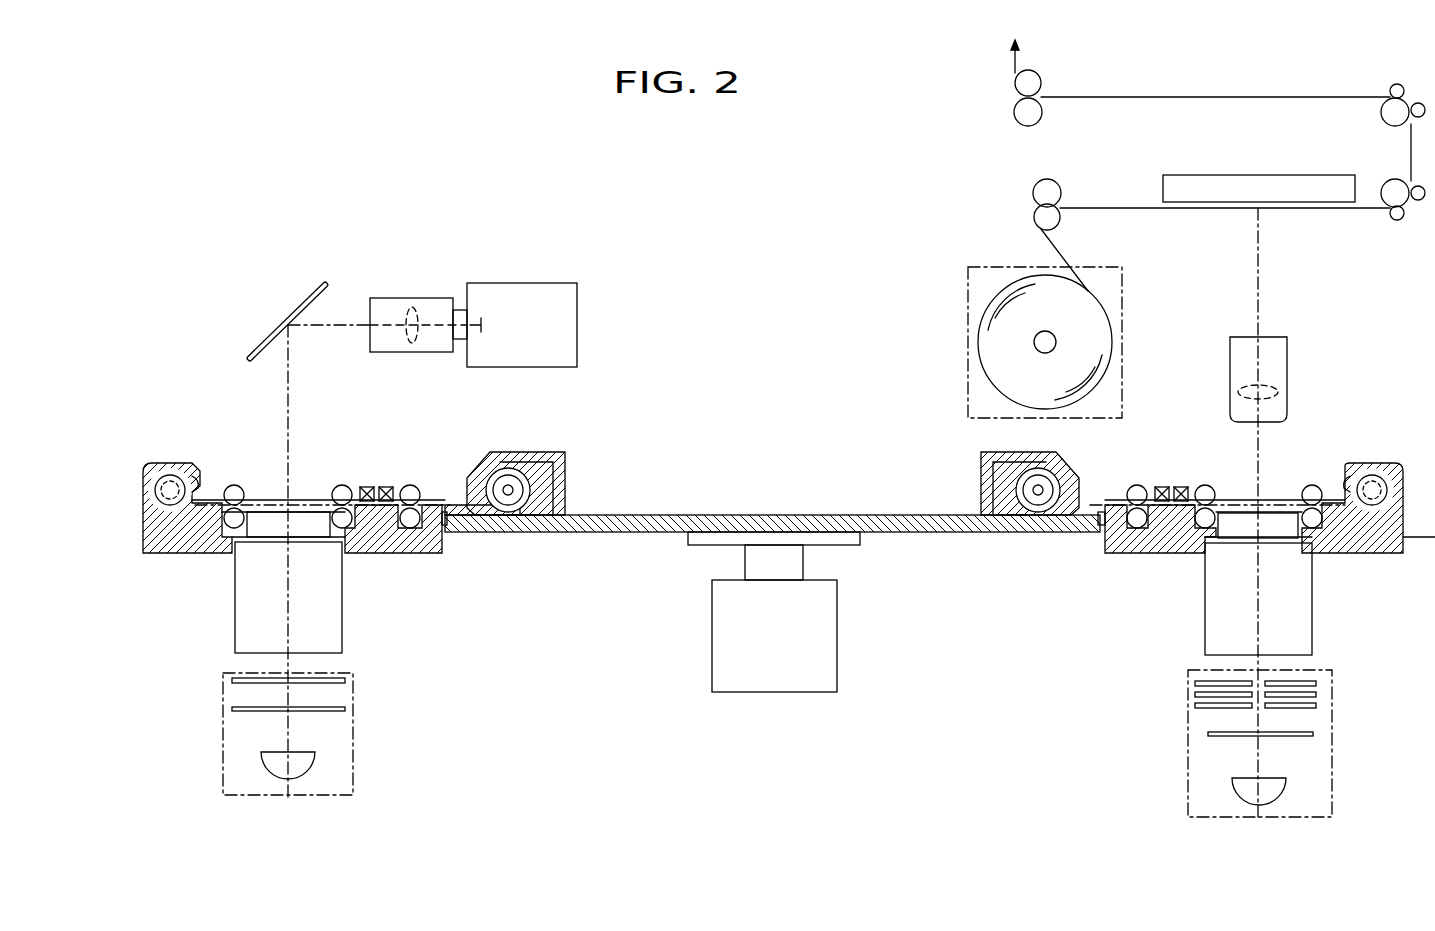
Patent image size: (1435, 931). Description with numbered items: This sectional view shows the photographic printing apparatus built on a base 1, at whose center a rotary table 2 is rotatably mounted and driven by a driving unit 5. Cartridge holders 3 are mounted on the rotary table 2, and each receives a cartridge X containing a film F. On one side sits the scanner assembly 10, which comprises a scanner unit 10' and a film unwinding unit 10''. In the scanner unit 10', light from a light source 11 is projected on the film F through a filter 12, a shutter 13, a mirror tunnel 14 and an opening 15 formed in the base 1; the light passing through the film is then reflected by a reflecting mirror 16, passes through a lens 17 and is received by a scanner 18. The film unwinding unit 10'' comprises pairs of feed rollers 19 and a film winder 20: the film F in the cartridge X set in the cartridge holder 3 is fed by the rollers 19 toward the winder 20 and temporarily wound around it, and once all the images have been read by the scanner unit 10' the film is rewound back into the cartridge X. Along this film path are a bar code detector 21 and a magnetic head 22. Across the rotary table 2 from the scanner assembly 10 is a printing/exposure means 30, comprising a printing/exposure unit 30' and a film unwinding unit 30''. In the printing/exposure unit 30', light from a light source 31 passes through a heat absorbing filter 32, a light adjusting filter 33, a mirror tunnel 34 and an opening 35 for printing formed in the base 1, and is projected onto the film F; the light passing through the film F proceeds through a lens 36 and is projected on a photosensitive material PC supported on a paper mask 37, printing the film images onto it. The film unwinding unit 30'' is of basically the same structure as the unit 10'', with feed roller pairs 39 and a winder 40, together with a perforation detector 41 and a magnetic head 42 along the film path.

The base 1 is at (150, 553).
The rotary table 2 is at (685, 520).
The cartridge holder 3 is at (535, 452).
The driving unit 5 is at (832, 623).
The scanner assembly 10 is at (220, 528).
The scanner unit 10' is at (377, 251).
The film unwinding unit 10'' is at (480, 447).
The light source 11 is at (290, 766).
The filter 12 is at (345, 711).
The shutter 13 is at (345, 683).
The mirror tunnel 14 is at (332, 617).
The opening 15 is at (270, 542).
The reflecting mirror 16 is at (272, 330).
The lens 17 is at (412, 307).
The scanner 18 is at (526, 300).
The feed rollers 19 is at (198, 553).
The film winder 20 is at (162, 462).
The bar code detector 21 is at (362, 487).
The magnetic head 22 is at (388, 487).
The printing/exposure means 30 is at (1174, 165).
The printing/exposure unit 30' is at (1343, 512).
The film unwinding unit 30'' is at (1085, 342).
The light source 31 is at (1262, 792).
The heat absorbing filter 32 is at (1313, 735).
The light adjusting filter 33 is at (1332, 686).
The mirror tunnel 34 is at (1308, 615).
The opening for printing 35 is at (1238, 545).
The lens 36 is at (1278, 360).
The paper mask 37 is at (1218, 185).
The feed roller pairs 39 is at (1137, 522).
The winder 40 is at (1368, 470).
The perforation detector 41 is at (1162, 487).
The magnetic head 42 is at (1182, 487).
The film F is at (280, 502).
The cartridge X is at (535, 525).
The photosensitive material PC is at (1147, 208).